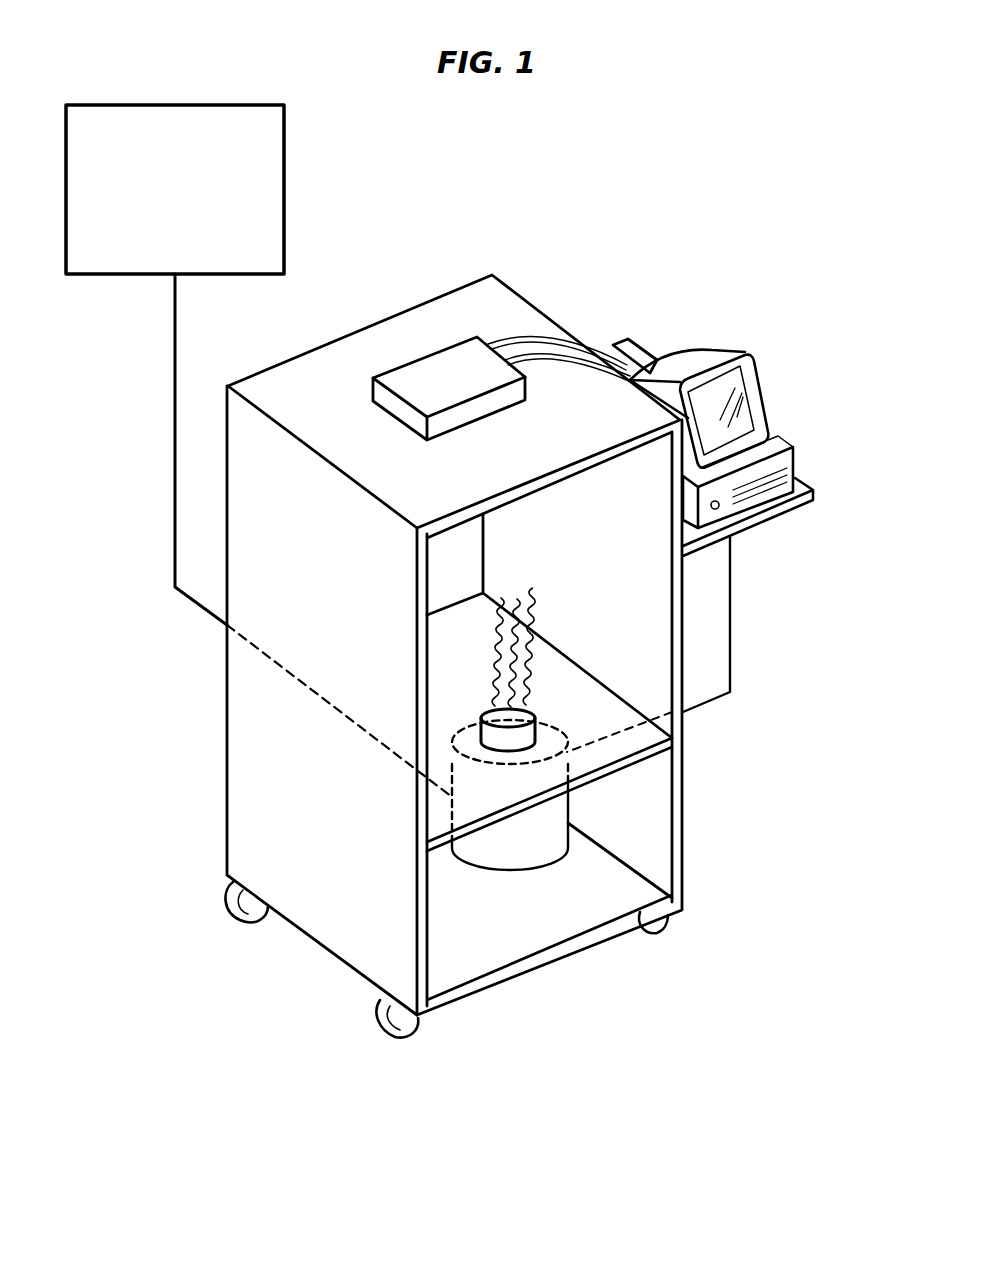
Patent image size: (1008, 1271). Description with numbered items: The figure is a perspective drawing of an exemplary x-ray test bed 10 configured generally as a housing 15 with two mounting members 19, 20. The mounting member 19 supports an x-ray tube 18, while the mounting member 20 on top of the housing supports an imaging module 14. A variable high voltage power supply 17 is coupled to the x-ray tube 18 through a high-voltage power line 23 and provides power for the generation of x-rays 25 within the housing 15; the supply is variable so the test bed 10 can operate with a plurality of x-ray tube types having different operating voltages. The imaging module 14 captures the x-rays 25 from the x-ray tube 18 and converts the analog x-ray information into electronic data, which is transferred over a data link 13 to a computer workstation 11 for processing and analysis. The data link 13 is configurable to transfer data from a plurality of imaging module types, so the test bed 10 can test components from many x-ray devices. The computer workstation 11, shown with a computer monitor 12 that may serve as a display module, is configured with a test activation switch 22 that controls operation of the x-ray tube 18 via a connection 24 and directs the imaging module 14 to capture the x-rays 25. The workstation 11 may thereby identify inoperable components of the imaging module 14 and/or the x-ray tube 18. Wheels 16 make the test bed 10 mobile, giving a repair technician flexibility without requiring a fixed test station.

The x-ray test bed 10 is at (808, 202).
The computer workstation 11 is at (797, 460).
The computer monitor 12 is at (770, 397).
The data link 13 is at (598, 345).
The imaging module 14 is at (455, 357).
The housing 15 is at (684, 840).
The wheels 16 is at (253, 905).
The variable high voltage power supply 17 is at (163, 249).
The x-ray tube 18 is at (537, 843).
The mounting member 19 is at (672, 748).
The mounting member 20 is at (352, 370).
The test activation switch 22 is at (719, 507).
The high-voltage power line 23 is at (175, 553).
The connection 24 is at (732, 609).
The x-rays 25 is at (538, 607).